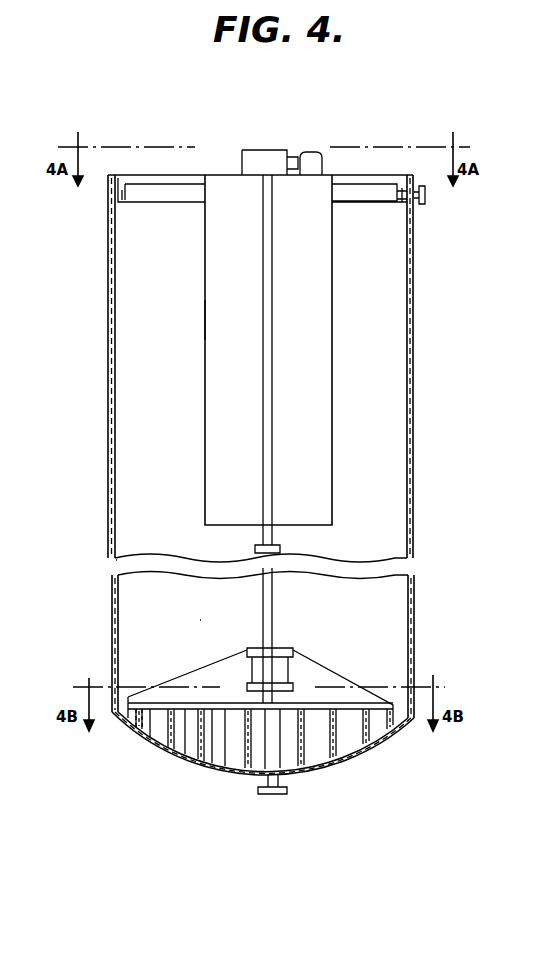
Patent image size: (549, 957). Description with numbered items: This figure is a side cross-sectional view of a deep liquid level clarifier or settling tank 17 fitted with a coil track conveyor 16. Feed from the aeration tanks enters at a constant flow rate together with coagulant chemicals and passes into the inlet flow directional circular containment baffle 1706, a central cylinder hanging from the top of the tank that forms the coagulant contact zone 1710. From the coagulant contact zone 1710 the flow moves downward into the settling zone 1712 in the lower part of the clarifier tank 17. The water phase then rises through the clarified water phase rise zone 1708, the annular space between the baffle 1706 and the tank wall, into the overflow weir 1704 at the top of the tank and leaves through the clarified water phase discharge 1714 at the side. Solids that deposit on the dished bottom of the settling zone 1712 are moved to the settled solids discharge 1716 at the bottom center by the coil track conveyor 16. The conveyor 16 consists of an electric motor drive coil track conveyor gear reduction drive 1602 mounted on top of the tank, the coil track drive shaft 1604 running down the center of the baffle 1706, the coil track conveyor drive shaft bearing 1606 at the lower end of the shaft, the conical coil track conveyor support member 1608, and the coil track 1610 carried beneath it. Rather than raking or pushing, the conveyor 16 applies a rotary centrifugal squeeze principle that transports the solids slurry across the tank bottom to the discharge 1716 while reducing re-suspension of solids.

The settling system (clarifier tank) 17 is at (108, 450).
The overflow weir 1704 is at (122, 194).
The clarified water phase discharge 1714 is at (415, 204).
The electric motor drive coil track conveyor gear reduction drive 1602 is at (283, 149).
The coagulant contact zone 1710 is at (248, 266).
The inlet flow directional circular containment baffle 1706 is at (205, 322).
The clarified water phase rise zone 1708 is at (182, 386).
The coil track drive shaft 1604 is at (272, 498).
The coil track conveyor drive shaft bearing 1606 is at (282, 546).
The settling zone 1712 is at (214, 616).
The coil track conveyor support member 1608 is at (183, 670).
The coil track 1610 is at (183, 750).
The coil track conveyor 16 is at (265, 759).
The settled solids discharge 1716 is at (289, 792).